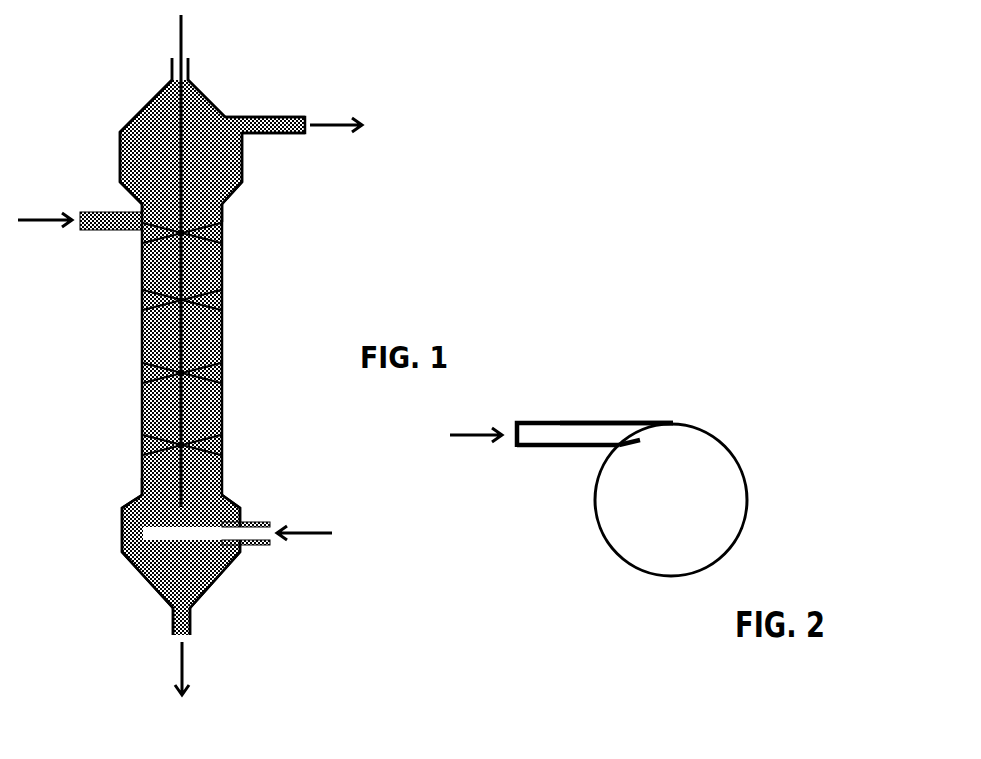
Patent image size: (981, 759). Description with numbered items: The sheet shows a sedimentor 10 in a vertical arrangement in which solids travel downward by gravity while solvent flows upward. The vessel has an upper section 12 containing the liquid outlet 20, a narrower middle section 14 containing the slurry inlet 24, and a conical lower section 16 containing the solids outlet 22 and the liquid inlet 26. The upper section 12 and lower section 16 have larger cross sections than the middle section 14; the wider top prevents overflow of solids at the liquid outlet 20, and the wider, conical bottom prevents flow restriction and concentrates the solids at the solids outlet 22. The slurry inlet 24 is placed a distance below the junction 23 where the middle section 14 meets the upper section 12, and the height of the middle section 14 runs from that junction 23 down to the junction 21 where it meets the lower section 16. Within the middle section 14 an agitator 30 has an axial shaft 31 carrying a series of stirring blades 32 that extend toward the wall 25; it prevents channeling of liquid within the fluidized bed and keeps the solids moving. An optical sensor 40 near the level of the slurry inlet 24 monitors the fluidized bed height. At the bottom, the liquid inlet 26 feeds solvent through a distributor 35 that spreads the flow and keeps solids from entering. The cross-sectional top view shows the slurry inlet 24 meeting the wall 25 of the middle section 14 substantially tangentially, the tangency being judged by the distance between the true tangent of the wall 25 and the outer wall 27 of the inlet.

In FIG. 1, the sedimentor 10 is at (249, 355).
In FIG. 1, the upper section 12 is at (120, 132).
In FIG. 1, the middle section 14 is at (142, 327).
In FIG. 2, the middle section 14 is at (707, 485).
In FIG. 1, the lower section 16 is at (128, 567).
In FIG. 1, the liquid outlet 20 is at (266, 117).
In FIG. 1, the junction 21 is at (138, 486).
In FIG. 1, the solids outlet 22 is at (190, 622).
In FIG. 1, the junction 23 is at (140, 201).
In FIG. 1, the slurry inlet 24 is at (110, 230).
In FIG. 2, the slurry inlet 24 is at (568, 427).
In FIG. 2, the wall 25 is at (675, 423).
In FIG. 1, the liquid inlet 26 is at (253, 545).
In FIG. 2, the outer wall 27 is at (593, 425).
In FIG. 1, the agitator 30 is at (182, 293).
In FIG. 1, the axial shaft 31 is at (183, 44).
In FIG. 1, the stirring blades 32 is at (222, 355).
In FIG. 1, the distributor 35 is at (192, 522).
In FIG. 1, the optical sensor 40 is at (222, 213).